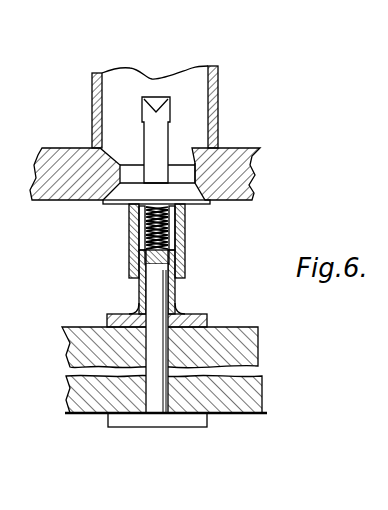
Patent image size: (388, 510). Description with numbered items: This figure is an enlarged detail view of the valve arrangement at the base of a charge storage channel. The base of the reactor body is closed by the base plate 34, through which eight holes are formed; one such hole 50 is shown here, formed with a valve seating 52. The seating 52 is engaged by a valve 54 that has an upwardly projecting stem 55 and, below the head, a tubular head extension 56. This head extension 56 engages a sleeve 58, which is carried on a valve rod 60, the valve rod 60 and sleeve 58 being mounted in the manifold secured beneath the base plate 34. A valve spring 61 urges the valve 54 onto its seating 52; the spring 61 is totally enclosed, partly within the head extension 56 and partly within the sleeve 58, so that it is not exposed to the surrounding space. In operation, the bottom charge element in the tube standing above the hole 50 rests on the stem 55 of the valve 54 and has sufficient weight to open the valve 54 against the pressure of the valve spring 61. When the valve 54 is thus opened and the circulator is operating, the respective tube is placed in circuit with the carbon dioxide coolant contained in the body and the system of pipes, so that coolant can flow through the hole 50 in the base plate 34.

The base plate 34 is at (233, 165).
The hole 50 is at (183, 170).
The valve seating 52 is at (197, 203).
The valve 54 is at (139, 108).
The stem 55 is at (155, 135).
The tubular head extension 56 is at (185, 268).
The sleeve 58 is at (208, 318).
The valve rod 60 is at (155, 410).
The valve spring 61 is at (129, 228).